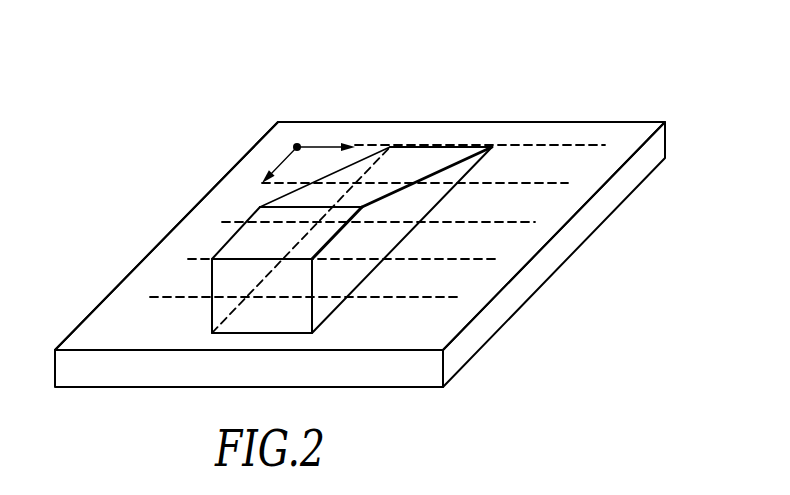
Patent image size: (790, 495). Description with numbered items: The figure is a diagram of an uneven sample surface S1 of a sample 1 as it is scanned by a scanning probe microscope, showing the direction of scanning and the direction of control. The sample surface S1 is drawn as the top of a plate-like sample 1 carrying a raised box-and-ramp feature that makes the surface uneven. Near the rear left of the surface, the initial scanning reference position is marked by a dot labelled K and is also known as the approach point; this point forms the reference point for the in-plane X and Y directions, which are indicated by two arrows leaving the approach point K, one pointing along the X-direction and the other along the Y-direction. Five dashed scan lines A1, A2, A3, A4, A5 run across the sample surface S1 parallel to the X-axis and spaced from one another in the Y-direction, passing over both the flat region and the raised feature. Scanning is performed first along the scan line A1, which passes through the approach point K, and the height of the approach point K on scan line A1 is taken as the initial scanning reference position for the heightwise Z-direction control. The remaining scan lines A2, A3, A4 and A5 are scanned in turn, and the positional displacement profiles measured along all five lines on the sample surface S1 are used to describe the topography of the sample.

The workpiece 1 is at (127, 253).
The sample surface S1 is at (221, 185).
The approach point K is at (338, 103).
The X-direction X is at (326, 137).
The Y-direction Y is at (273, 165).
The scan line A1 is at (493, 141).
The scan line A2 is at (428, 179).
The scan line A3 is at (390, 218).
The scan line A4 is at (355, 258).
The scan line A5 is at (316, 294).